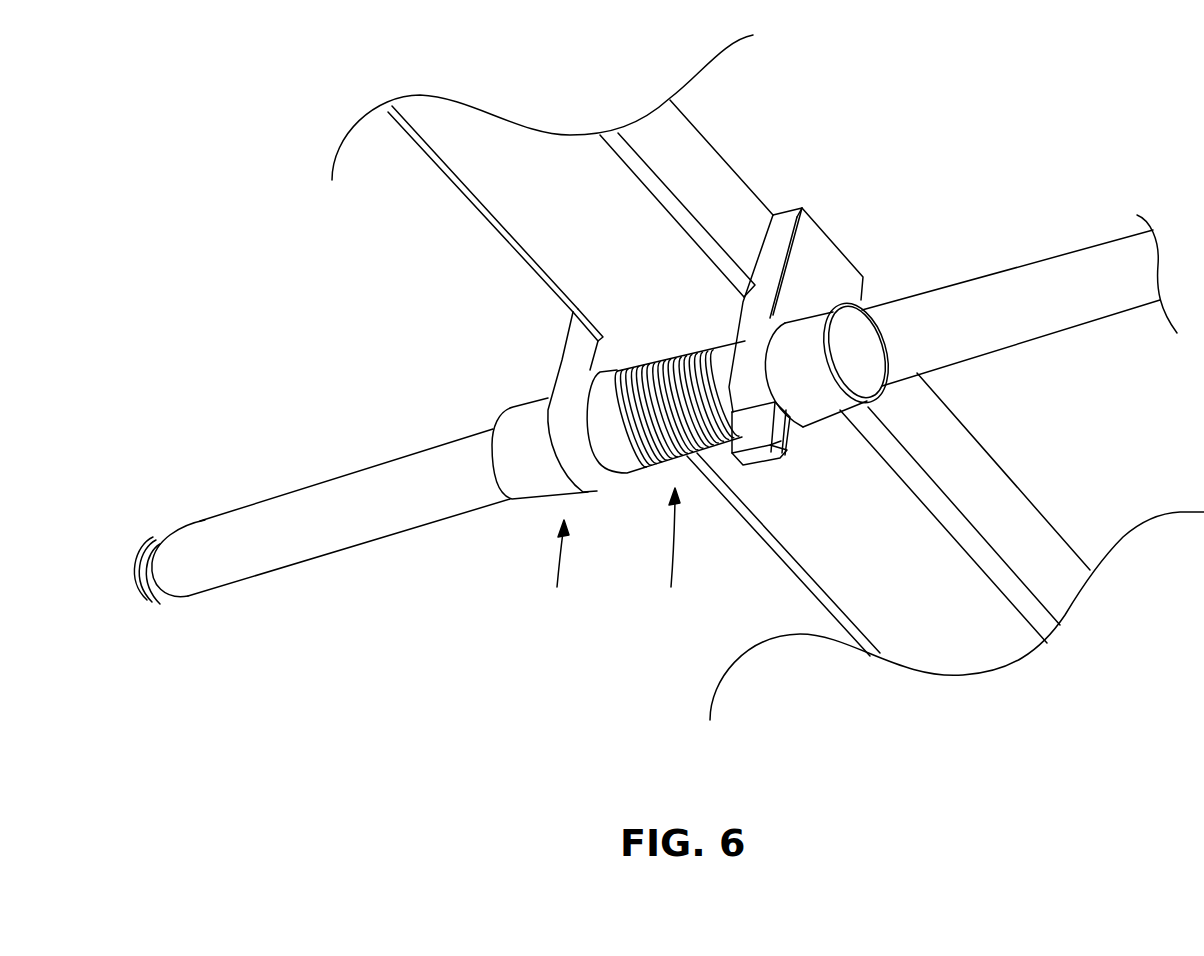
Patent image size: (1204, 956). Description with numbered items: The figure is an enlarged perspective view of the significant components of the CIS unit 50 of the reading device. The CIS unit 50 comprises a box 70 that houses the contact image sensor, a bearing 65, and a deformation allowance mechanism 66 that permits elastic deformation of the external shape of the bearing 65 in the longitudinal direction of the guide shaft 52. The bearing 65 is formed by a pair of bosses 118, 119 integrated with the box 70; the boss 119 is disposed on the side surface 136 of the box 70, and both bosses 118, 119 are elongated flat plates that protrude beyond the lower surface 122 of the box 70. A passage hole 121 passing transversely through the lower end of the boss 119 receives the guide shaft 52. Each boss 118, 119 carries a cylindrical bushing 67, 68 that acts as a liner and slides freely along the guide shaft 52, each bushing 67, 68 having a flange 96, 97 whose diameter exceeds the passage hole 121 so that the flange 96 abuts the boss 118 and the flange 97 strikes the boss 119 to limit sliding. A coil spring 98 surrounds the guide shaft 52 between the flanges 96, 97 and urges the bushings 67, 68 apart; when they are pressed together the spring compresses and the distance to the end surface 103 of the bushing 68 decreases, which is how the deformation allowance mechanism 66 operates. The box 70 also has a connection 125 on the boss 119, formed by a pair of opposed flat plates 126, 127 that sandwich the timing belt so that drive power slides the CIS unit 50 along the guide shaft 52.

The CIS unit 50 is at (782, 92).
The guide shaft 52 is at (1093, 307).
The bearing 65 is at (557, 566).
The deformation allowance mechanism 66 is at (667, 550).
The bushing 67 is at (525, 480).
The bushing 68 is at (812, 337).
The box 70 is at (1022, 495).
The flange 96 is at (612, 478).
The flange 97 is at (730, 408).
The coil spring 98 is at (645, 368).
The end surface 103 is at (852, 313).
The boss 118 is at (578, 358).
The boss 119 is at (807, 230).
The passage hole 121 is at (772, 388).
The lower surface 122 is at (930, 640).
The connection 125 is at (848, 468).
The flat plate 126 is at (748, 442).
The flat plate 127 is at (762, 478).
The side surface 136 is at (705, 165).